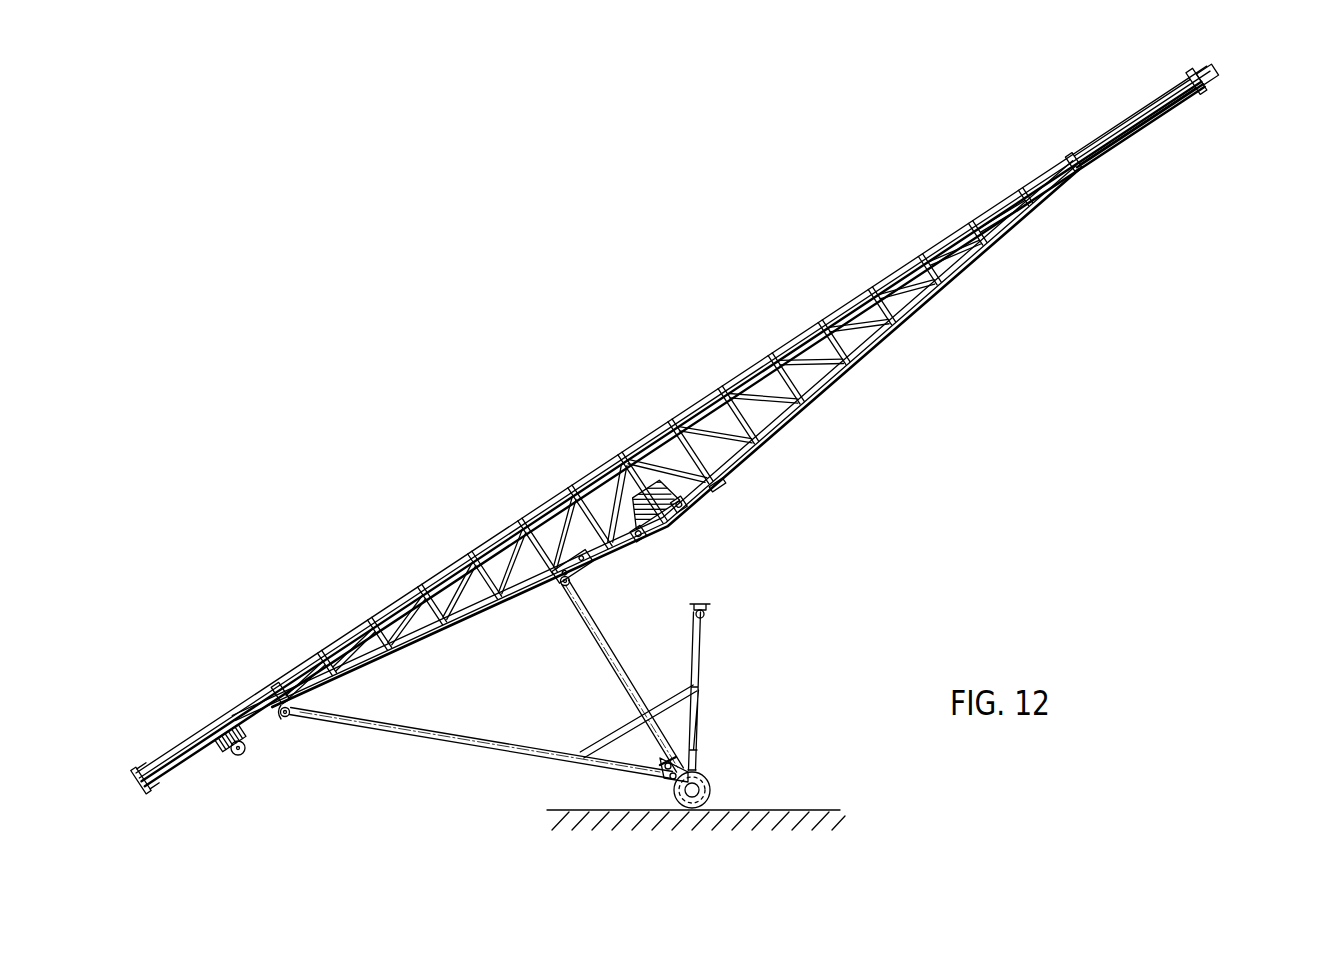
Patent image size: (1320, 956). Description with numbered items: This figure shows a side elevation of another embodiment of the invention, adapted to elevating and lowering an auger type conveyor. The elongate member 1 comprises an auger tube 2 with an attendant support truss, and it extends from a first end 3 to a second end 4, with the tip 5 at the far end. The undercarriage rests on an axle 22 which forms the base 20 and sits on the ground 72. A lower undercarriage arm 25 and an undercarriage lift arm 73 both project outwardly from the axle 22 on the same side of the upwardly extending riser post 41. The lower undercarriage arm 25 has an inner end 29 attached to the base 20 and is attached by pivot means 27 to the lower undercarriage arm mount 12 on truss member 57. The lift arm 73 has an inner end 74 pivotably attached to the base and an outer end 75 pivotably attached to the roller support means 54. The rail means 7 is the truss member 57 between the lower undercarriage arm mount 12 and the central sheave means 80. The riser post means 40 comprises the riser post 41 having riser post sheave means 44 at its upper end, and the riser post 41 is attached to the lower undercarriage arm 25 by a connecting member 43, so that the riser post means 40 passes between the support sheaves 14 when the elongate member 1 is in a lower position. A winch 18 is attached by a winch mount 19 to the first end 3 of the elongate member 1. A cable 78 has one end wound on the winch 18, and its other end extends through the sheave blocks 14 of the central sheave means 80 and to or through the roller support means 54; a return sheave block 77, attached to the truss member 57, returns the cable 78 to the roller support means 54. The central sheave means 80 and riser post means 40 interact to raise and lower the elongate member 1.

The elongate member 1 is at (518, 421).
The auger tube 2 is at (250, 709).
The first end 3 is at (152, 778).
The second end 4 is at (1162, 108).
The boom tip end 5 is at (1226, 70).
The rail means 7 is at (481, 613).
The lower undercarriage arm mount 12 is at (281, 697).
The support sheaves 14 is at (646, 540).
The winch 18 is at (245, 748).
The winch mount 19 is at (218, 754).
The base 20 is at (742, 760).
The axle 22 is at (693, 789).
The lower undercarriage arm 25 is at (446, 741).
The pivot means 27 is at (288, 728).
The inner end 29 is at (668, 779).
The riser post means 40 is at (766, 681).
The riser post 41 is at (700, 722).
The connecting member 43 is at (612, 737).
The riser post sheave means 44 is at (708, 612).
The roller support means 54 is at (592, 572).
The truss member 57 is at (977, 246).
The ground 72 is at (822, 818).
The undercarriage lift arm 73 is at (608, 648).
The inner end 74 is at (664, 764).
The outer end 75 is at (562, 587).
The return sheave block 77 is at (728, 480).
The cable 78 is at (446, 638).
The central sheave means 80 is at (718, 559).